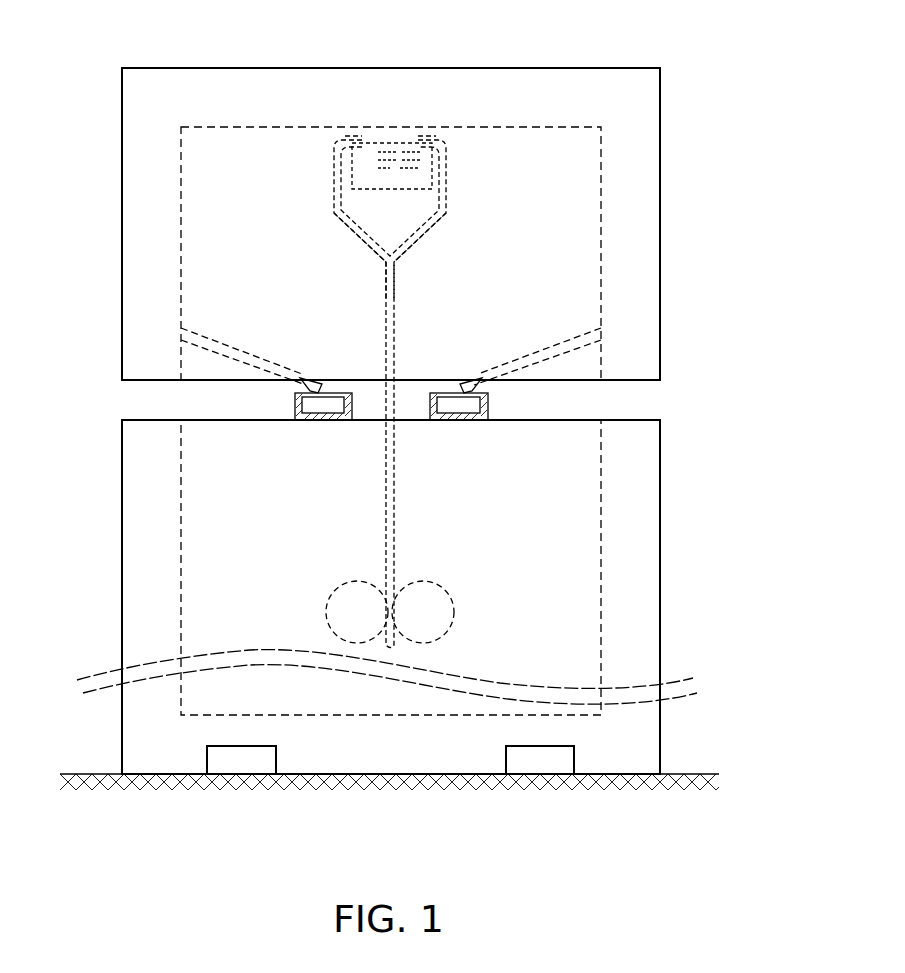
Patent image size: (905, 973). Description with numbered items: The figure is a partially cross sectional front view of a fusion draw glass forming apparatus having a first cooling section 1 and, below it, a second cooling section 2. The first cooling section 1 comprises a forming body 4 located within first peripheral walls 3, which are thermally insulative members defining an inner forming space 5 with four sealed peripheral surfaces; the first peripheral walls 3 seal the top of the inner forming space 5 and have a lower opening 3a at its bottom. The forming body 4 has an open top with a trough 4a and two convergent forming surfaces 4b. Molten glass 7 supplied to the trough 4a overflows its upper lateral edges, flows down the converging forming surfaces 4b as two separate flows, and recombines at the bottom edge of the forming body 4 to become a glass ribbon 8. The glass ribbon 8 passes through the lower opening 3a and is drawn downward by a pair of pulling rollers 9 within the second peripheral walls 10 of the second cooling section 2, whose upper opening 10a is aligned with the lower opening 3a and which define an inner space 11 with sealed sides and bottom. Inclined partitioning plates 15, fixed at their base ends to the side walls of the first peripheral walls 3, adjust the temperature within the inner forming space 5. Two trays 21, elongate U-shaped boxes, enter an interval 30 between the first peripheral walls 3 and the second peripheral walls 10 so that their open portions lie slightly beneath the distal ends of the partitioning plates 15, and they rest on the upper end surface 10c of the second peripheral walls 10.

The first cooling section 1 is at (722, 147).
The second cooling section 2 is at (722, 515).
The first peripheral walls 3 is at (652, 194).
The lower opening 3a is at (601, 362).
The forming body 4 is at (452, 168).
The trough 4a is at (369, 135).
The convergent forming surfaces 4b is at (345, 226).
The inner forming space 5 is at (193, 162).
The molten glass 7 is at (408, 140).
The glass ribbon 8 is at (395, 275).
The pulling rollers 9 is at (328, 597).
The second peripheral walls 10 is at (130, 458).
The upper opening 10a is at (180, 458).
The upper end surface 10c is at (555, 420).
The inner space 11 is at (192, 553).
The partitioning plates 15 is at (200, 328).
The trays 21 is at (298, 421).
The interval 30 is at (665, 402).